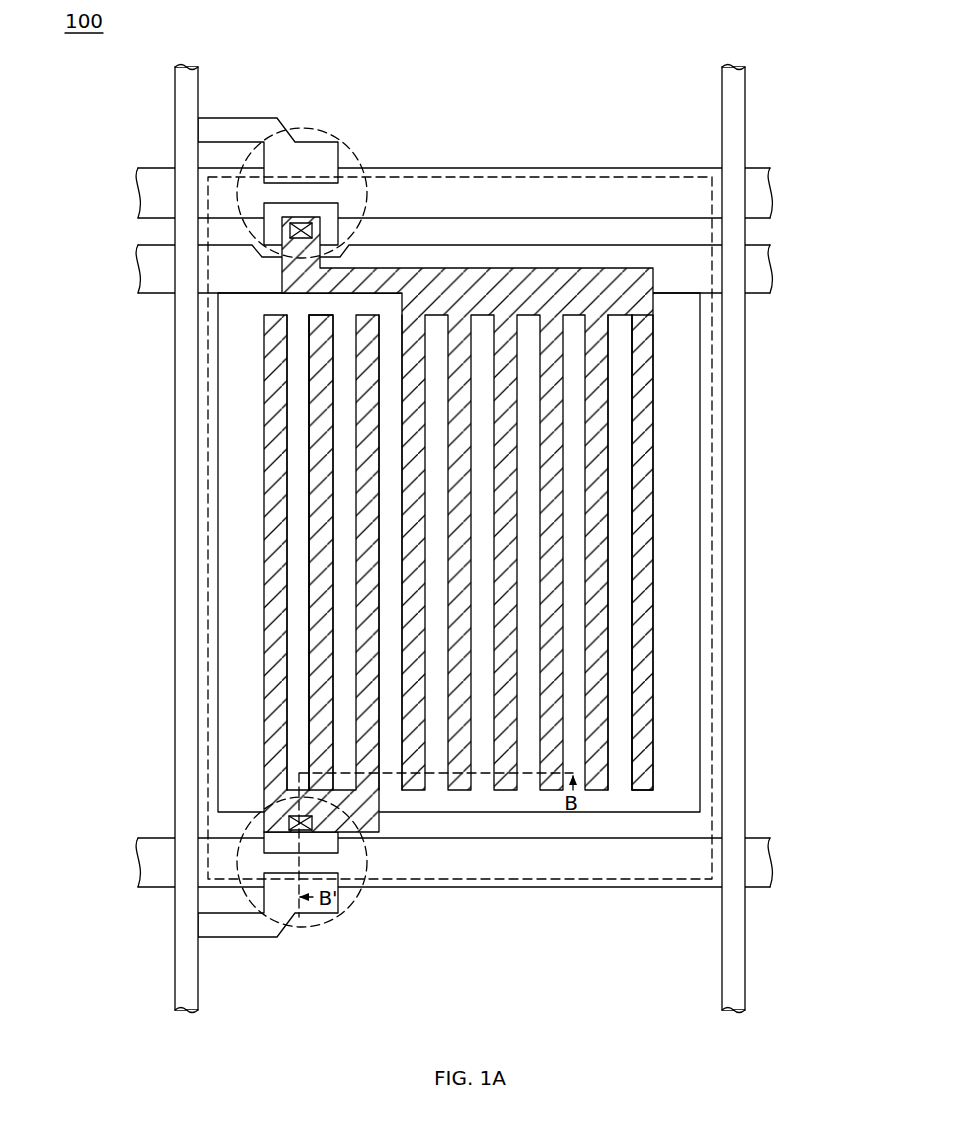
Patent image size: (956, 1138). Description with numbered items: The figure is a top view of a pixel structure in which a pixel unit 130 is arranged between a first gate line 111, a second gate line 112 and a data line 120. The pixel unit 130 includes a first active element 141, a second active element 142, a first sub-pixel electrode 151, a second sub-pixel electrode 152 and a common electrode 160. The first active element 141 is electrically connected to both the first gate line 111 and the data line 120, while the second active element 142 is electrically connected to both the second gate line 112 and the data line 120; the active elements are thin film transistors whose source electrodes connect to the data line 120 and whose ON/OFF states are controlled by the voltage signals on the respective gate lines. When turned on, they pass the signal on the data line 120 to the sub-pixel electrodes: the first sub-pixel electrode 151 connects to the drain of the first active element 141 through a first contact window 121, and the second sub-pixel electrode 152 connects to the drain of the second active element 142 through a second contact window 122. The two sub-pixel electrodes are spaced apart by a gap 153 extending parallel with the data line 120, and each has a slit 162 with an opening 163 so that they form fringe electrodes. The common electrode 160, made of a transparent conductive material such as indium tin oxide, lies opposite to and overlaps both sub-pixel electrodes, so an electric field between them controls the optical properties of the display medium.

The first gate line 111 is at (150, 197).
The second gate line 112 is at (150, 867).
The data line 120 is at (183, 82).
The first contact window 121 is at (300, 223).
The second contact window 122 is at (290, 820).
The pixel unit 130 is at (548, 177).
The first active element 141 is at (354, 144).
The second active element 142 is at (305, 929).
The first sub-pixel electrode 151 is at (643, 550).
The second sub-pixel electrode 152 is at (275, 705).
The gap 153 is at (387, 740).
The common electrode 160 is at (150, 272).
The slit 162 is at (295, 615).
The opening 163 is at (300, 316).